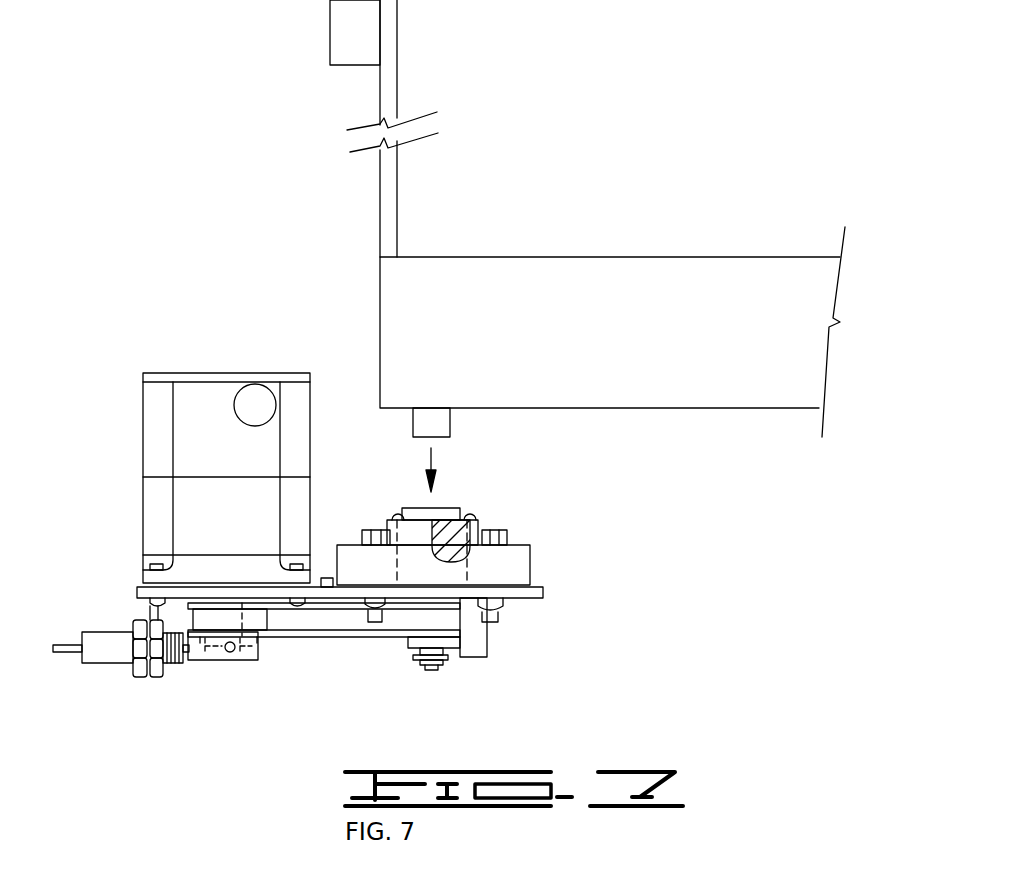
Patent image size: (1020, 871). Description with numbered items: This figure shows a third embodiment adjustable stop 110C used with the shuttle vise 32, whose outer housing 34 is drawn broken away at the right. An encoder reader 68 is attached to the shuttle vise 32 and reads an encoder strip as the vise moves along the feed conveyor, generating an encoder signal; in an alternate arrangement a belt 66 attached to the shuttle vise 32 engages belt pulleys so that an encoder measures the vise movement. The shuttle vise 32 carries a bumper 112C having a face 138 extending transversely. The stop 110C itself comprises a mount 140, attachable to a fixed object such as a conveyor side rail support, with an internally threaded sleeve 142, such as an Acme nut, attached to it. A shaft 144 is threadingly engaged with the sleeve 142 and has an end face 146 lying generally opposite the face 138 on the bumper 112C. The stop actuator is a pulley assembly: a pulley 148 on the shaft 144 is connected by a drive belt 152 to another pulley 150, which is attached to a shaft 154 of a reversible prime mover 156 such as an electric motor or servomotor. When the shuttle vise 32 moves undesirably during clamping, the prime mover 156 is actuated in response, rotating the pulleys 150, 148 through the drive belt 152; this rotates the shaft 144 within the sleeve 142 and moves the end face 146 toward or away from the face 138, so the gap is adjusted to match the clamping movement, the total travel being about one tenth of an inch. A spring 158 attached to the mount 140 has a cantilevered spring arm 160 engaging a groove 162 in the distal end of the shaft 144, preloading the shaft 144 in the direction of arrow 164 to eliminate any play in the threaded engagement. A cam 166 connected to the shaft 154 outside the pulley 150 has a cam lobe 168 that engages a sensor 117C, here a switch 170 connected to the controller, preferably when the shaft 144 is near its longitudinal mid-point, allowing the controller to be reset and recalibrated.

The encoder reader 68 is at (330, 37).
The belt 66 is at (398, 196).
The shuttle vise 32 is at (590, 246).
The outer housing 34 is at (780, 275).
The bumper 112C is at (428, 422).
The face 138 is at (467, 437).
The prime mover 156 is at (200, 408).
The internally threaded sleeve 142 is at (388, 528).
The drive belt 152 is at (345, 612).
The arrow 164 is at (440, 458).
The end face 146 is at (452, 512).
The third embodiment adjustable stop 110C is at (580, 516).
The shaft 154 is at (225, 605).
The mount 140 is at (542, 592).
The spring 158 is at (487, 632).
The pulley 148 is at (400, 640).
The groove 162 is at (448, 658).
The cantilevered spring arm 160 is at (415, 660).
The shaft 144 is at (440, 662).
The sensor 117C is at (69, 685).
The switch 170 is at (168, 668).
The cam lobe 168 is at (194, 650).
The cam 166 is at (232, 656).
The pulley 150 is at (268, 638).